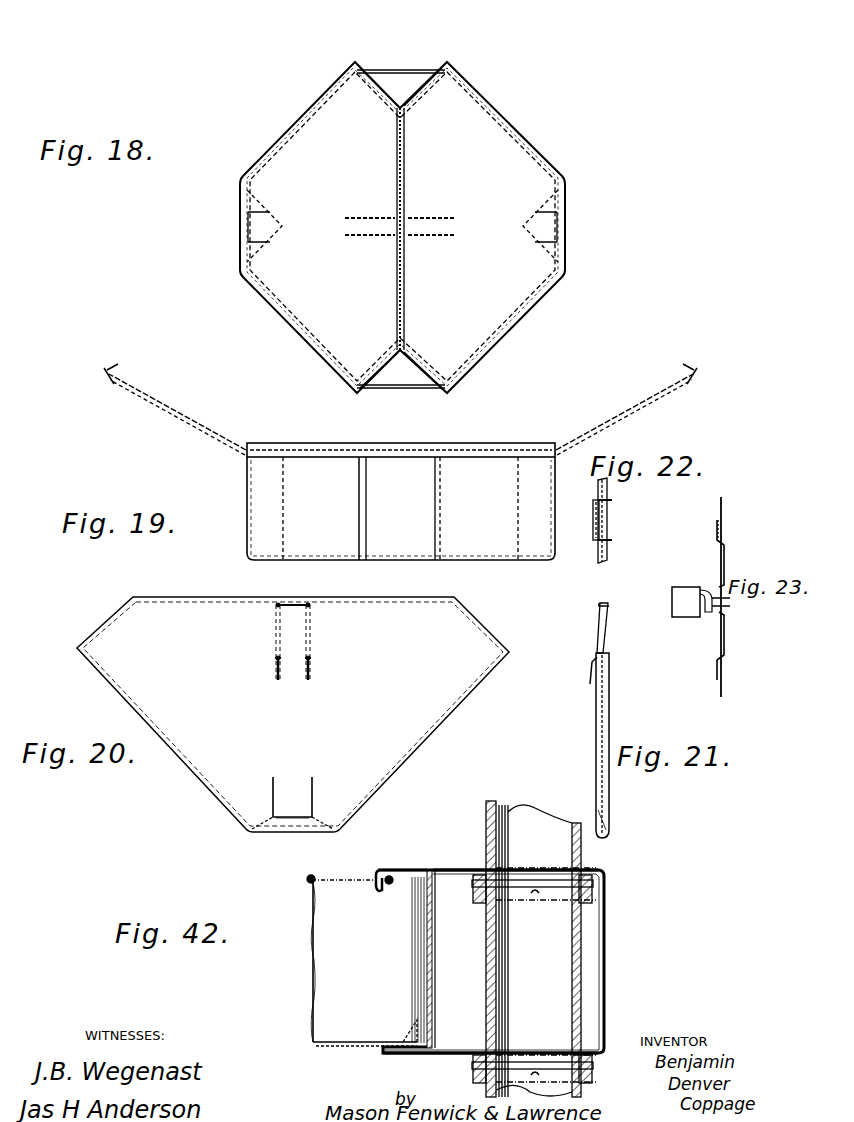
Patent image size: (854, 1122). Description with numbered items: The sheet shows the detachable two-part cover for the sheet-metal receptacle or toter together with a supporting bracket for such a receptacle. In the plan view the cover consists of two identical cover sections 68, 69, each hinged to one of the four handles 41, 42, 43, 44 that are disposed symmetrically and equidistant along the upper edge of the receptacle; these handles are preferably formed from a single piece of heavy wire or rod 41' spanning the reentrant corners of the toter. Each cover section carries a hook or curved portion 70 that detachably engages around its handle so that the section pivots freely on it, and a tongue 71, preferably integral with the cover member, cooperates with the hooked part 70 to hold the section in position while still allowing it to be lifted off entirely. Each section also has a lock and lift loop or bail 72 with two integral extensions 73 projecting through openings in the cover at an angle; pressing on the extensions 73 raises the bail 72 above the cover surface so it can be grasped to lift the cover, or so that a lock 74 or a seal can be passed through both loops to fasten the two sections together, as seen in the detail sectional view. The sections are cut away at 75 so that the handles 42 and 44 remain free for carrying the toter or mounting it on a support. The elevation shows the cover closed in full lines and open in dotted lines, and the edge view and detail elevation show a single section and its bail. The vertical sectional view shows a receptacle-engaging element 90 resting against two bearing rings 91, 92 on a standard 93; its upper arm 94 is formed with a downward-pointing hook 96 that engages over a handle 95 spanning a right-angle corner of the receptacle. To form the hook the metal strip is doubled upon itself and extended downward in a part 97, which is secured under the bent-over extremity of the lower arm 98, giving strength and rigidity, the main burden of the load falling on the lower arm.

In FIG. 18, the cover section 68 is at (505, 150).
In FIG. 19, the cover section 68 is at (196, 422).
In FIG. 22, the cover section 68 is at (628, 545).
In FIG. 20, the cover section 68 is at (402, 750).
In FIG. 18, the cover section 69 is at (300, 140).
In FIG. 18, the handle 41 is at (565, 218).
In FIG. 18, the wire or rod 41' is at (522, 343).
In FIG. 19, the wire or rod 41' is at (492, 475).
In FIG. 18, the handle 42 is at (401, 386).
In FIG. 18, the handle 43 is at (238, 194).
In FIG. 18, the handle 44 is at (428, 388).
In FIG. 18, the lock and lift loop or bail 72 is at (428, 70).
In FIG. 22, the lock and lift loop or bail 72 is at (593, 530).
In FIG. 20, the lock and lift loop or bail 72 is at (300, 607).
In FIG. 21, the lock and lift loop or bail 72 is at (597, 608).
In FIG. 18, the integral extensions 73 is at (350, 238).
In FIG. 20, the integral extensions 73 is at (276, 676).
In FIG. 23, the integral extensions 73 is at (716, 533).
In FIG. 19, the lock 74 is at (372, 457).
In FIG. 23, the lock 74 is at (684, 616).
In FIG. 18, the cut-away portion 75 is at (418, 90).
In FIG. 20, the hook or curved portion 70 is at (298, 833).
In FIG. 21, the hook or curved portion 70 is at (611, 833).
In FIG. 20, the tongue 71 is at (305, 800).
In FIG. 21, the tongue 71 is at (606, 822).
In FIG. 42, the receptacle-engaging element 90 is at (606, 958).
In FIG. 42, the bearing ring 91 is at (606, 899).
In FIG. 42, the bearing ring 92 is at (597, 1066).
In FIG. 42, the standard 93 is at (568, 962).
In FIG. 42, the upper arm 94 is at (445, 868).
In FIG. 42, the handle 95 is at (389, 890).
In FIG. 42, the hook 96 is at (376, 892).
In FIG. 42, the downward-extending part 97 is at (434, 970).
In FIG. 42, the lower arm 98 is at (452, 1055).